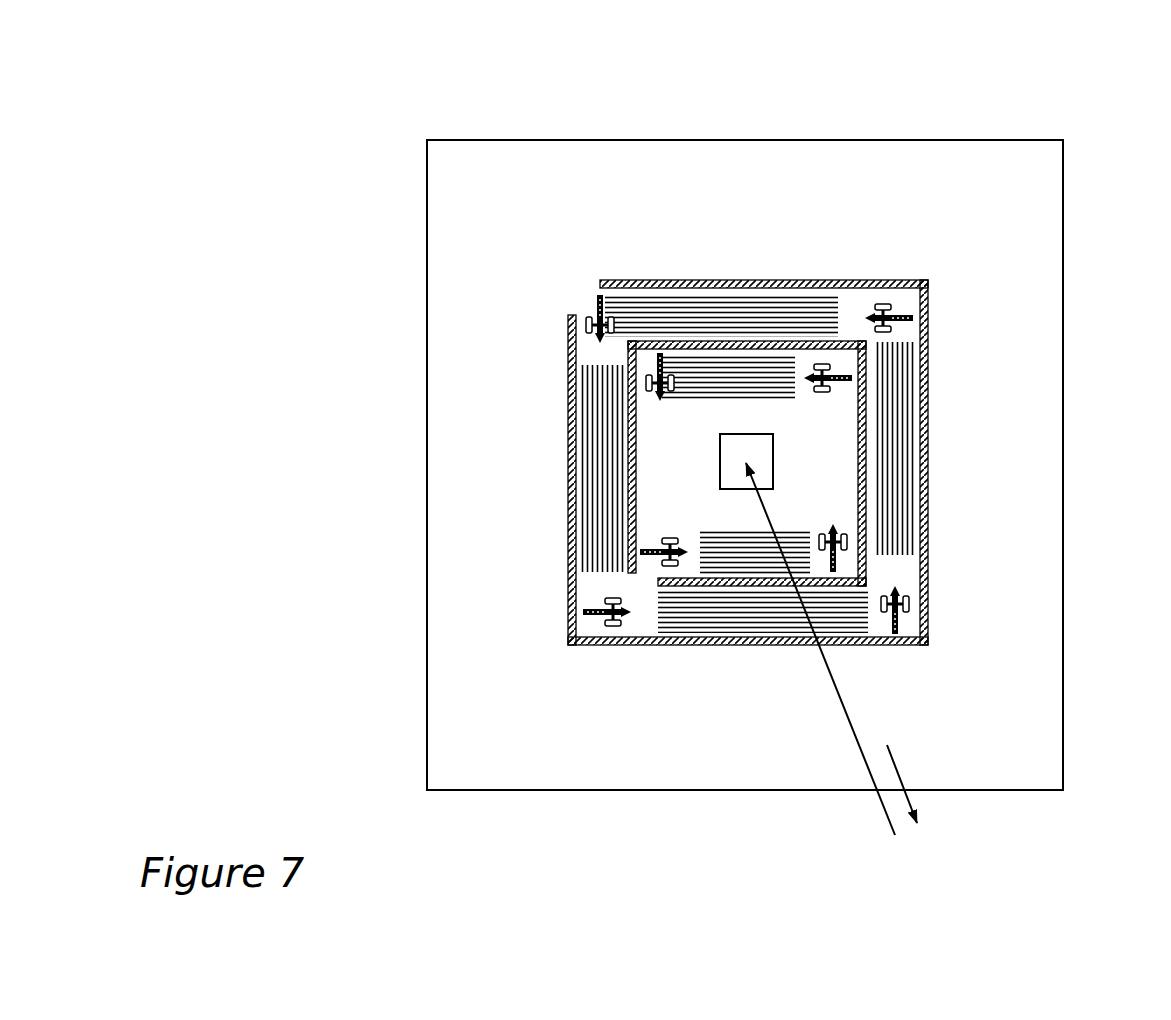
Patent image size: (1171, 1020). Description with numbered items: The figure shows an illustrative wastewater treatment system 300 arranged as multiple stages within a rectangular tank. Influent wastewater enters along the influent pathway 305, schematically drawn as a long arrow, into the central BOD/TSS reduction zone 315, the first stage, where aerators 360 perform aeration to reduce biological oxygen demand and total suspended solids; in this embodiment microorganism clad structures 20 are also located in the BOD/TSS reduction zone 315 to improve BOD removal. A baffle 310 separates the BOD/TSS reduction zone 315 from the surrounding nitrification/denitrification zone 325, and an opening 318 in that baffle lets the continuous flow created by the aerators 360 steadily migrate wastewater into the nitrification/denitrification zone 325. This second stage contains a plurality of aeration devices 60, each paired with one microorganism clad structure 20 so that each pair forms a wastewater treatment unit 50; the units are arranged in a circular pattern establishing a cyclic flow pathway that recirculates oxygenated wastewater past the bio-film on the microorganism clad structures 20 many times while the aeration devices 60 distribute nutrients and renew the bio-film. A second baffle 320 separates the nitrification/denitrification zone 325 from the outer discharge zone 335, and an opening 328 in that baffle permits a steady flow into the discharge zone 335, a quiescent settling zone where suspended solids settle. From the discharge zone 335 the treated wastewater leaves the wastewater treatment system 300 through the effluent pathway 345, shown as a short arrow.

The wastewater treatment system 300 is at (960, 95).
The discharge zone 335 is at (1032, 260).
The wastewater treatment unit 50 is at (910, 273).
The baffle 320 is at (928, 510).
The baffle 310 is at (870, 443).
The microorganism clad structure 20 is at (655, 622).
The BOD/TSS reduction zone 315 is at (663, 465).
The opening 318 is at (648, 576).
The opening 328 is at (583, 303).
The aerator 360 is at (645, 372).
The aeration device 60 is at (595, 624).
The nitrification/denitrification zone 325 is at (910, 580).
The influent pathway 305 is at (882, 815).
The effluent pathway 345 is at (897, 770).